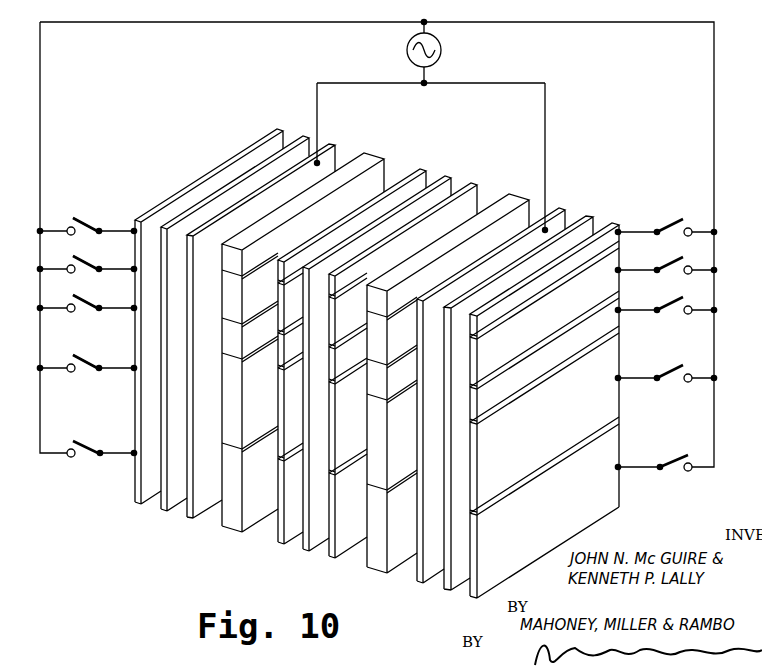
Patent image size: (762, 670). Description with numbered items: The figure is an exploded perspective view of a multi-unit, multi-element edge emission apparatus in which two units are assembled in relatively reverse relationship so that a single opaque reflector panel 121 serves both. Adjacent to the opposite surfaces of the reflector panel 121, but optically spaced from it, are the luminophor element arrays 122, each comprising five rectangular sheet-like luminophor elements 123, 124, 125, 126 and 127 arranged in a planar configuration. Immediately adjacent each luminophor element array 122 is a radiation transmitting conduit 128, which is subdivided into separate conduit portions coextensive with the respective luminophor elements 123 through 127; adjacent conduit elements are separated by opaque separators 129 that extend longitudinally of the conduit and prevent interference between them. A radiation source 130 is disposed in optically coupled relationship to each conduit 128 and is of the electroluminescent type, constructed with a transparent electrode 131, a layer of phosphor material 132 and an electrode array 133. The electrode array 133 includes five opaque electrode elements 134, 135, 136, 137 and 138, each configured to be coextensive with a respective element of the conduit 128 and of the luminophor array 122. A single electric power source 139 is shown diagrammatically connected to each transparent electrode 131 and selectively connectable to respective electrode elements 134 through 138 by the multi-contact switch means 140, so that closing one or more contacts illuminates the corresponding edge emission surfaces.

The reflector panel 121 is at (316, 549).
The luminophor element array 122 is at (276, 541).
The luminophor element 123 is at (358, 523).
The luminophor element 124 is at (376, 403).
The luminophor element 125 is at (340, 357).
The luminophor element 126 is at (340, 313).
The luminophor element 127 is at (374, 373).
The radiation transmitting conduit 128 is at (350, 402).
The opaque separator 129 is at (377, 398).
The radiation source 130 is at (371, 380).
The transparent electrode 131 is at (226, 229).
The layer of phosphor material 132 is at (177, 233).
The electrode array 133 is at (371, 363).
The electrode element 134 is at (544, 470).
The electrode element 135 is at (544, 381).
The electrode element 136 is at (604, 332).
The electrode element 137 is at (544, 290).
The electrode element 138 is at (606, 224).
The electric power source 139 is at (442, 50).
The multi-contact switch means 140 is at (86, 462).